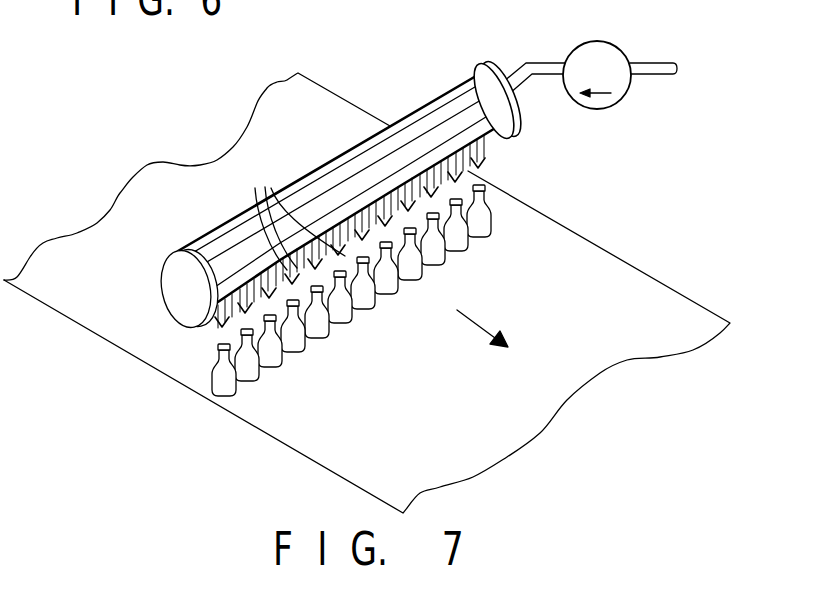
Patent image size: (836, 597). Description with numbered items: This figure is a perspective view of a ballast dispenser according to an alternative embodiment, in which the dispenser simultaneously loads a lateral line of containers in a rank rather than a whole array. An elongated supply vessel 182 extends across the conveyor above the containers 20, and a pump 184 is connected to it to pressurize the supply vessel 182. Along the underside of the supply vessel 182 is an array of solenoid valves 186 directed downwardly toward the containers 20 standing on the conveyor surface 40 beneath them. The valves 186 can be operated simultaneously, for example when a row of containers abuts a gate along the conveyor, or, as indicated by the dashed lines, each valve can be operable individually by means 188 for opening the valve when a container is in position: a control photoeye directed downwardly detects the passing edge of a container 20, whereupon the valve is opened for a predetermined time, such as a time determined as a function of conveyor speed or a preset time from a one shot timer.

The container 20 is at (303, 352).
The conveyor platform 40 is at (617, 271).
The supply vessel 182 is at (441, 97).
The pump 184 is at (592, 45).
The solenoid valves 186 is at (294, 217).
The means for opening the valve 188 is at (489, 169).